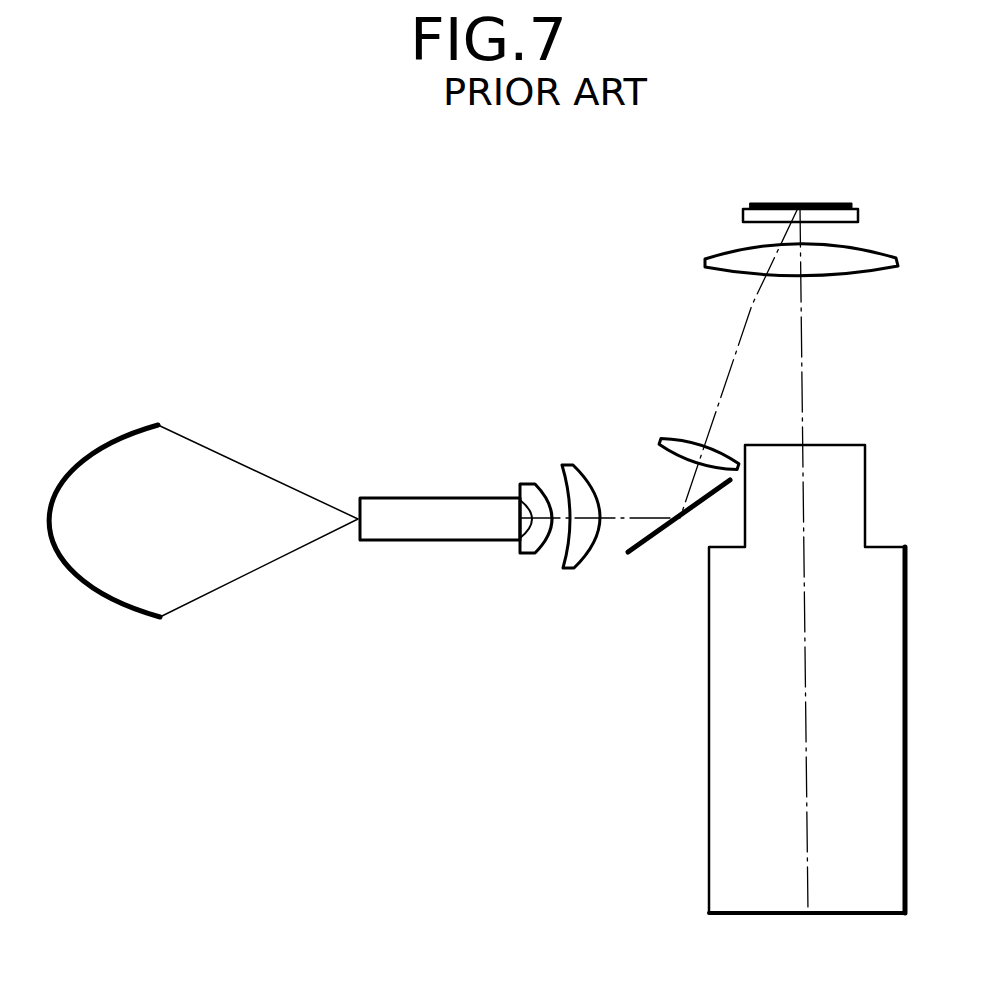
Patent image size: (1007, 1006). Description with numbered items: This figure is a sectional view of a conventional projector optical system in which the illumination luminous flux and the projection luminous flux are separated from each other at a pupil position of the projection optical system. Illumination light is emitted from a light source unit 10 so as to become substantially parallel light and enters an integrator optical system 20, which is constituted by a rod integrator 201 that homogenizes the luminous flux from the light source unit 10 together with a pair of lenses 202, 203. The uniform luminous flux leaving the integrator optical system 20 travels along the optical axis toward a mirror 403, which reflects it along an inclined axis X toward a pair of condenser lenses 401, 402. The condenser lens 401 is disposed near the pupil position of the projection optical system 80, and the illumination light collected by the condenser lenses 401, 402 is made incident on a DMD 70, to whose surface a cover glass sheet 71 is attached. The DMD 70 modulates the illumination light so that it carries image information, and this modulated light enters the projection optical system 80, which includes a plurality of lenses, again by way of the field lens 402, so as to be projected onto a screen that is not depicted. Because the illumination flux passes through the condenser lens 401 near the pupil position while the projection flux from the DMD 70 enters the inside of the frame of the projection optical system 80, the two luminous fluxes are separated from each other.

The light source unit 10 is at (109, 430).
The integrator optical system 20 is at (468, 430).
The rod integrator 201 is at (413, 498).
The lens 202 is at (532, 483).
The lens 203 is at (574, 463).
The condenser lens 401 is at (660, 438).
The condenser lens 402 is at (705, 260).
The mirror 403 is at (662, 537).
The optical axis X is at (731, 363).
The DMD 70 is at (834, 202).
The cover glass sheet 71 is at (858, 213).
The projection optical system 80 is at (709, 770).